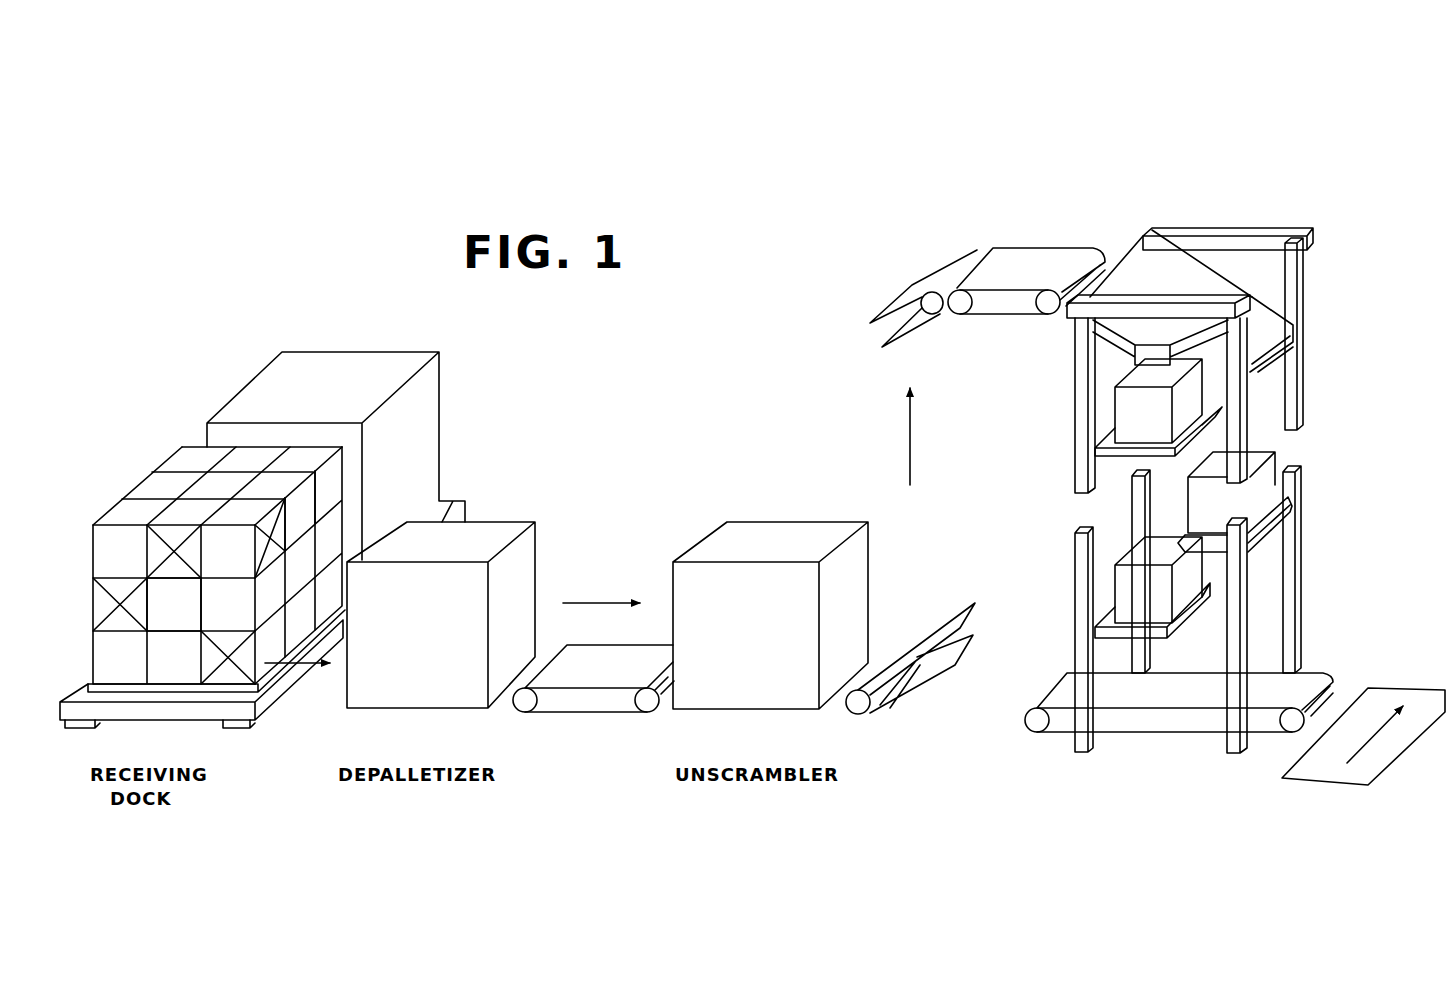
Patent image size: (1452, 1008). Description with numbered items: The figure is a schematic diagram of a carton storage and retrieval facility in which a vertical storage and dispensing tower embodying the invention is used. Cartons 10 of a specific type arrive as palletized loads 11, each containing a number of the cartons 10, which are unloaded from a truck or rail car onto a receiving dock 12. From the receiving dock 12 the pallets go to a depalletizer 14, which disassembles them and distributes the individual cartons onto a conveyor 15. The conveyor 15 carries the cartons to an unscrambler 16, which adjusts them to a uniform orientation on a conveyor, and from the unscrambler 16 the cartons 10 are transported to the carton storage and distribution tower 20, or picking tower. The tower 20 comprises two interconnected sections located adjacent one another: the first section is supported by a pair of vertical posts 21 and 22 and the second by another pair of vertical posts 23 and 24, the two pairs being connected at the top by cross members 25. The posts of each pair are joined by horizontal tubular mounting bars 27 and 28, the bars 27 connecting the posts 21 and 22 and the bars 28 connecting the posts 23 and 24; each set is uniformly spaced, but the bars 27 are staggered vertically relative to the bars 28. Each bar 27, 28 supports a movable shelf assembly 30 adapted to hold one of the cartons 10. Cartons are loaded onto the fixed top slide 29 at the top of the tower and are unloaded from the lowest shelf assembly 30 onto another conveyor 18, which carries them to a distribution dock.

The cartons 10 is at (173, 567).
The palletized loads 11 is at (137, 485).
The receiving dock 12 is at (287, 700).
The depalletizer 14 is at (371, 530).
The conveyor 15 is at (600, 712).
The unscrambler 16 is at (770, 615).
The conveyor 18 is at (1353, 690).
The carton storage and distribution tower 20 is at (1066, 534).
The vertical post 21 is at (1140, 357).
The vertical post 22 is at (1142, 236).
The vertical post 23 is at (1252, 448).
The vertical post 24 is at (1305, 392).
The cross members 25 is at (1240, 227).
The horizontal tubular mounting bars 27 is at (1100, 430).
The horizontal tubular mounting bars 28 is at (1278, 518).
The fixed top slide 29 is at (1163, 265).
The movable shelf assembly 30 is at (1272, 296).